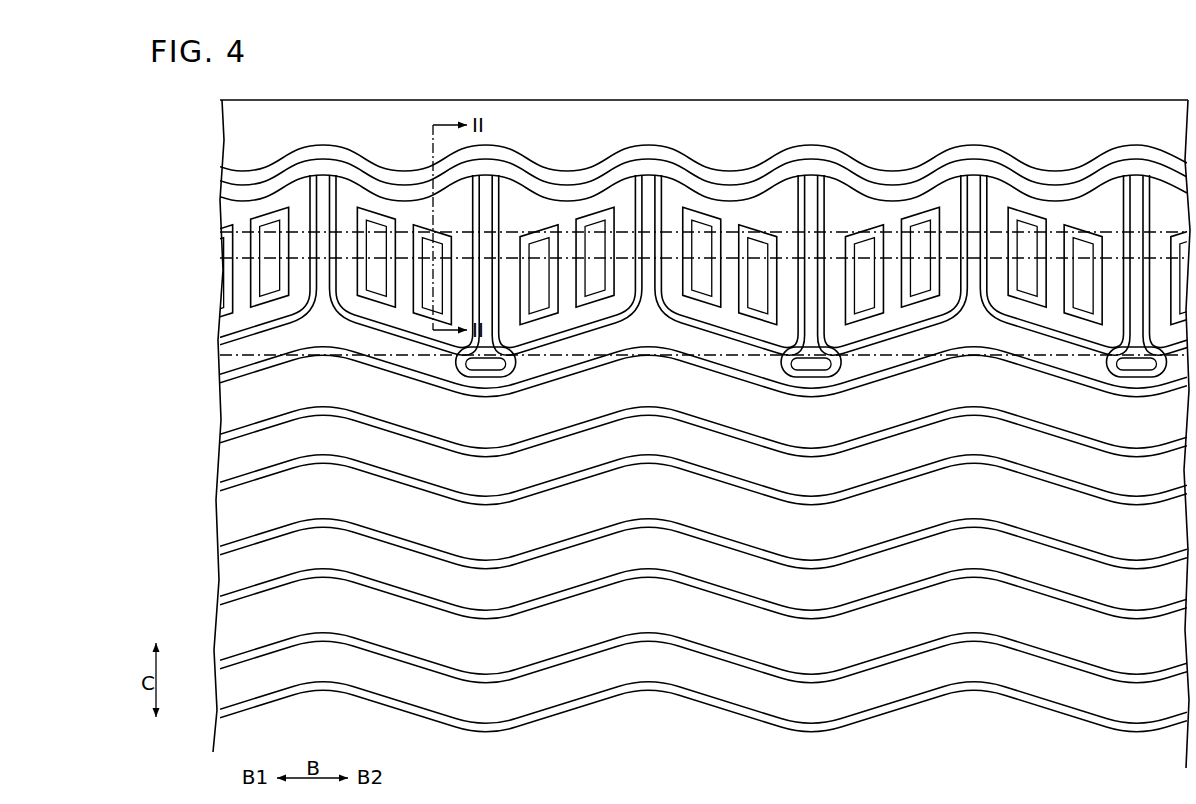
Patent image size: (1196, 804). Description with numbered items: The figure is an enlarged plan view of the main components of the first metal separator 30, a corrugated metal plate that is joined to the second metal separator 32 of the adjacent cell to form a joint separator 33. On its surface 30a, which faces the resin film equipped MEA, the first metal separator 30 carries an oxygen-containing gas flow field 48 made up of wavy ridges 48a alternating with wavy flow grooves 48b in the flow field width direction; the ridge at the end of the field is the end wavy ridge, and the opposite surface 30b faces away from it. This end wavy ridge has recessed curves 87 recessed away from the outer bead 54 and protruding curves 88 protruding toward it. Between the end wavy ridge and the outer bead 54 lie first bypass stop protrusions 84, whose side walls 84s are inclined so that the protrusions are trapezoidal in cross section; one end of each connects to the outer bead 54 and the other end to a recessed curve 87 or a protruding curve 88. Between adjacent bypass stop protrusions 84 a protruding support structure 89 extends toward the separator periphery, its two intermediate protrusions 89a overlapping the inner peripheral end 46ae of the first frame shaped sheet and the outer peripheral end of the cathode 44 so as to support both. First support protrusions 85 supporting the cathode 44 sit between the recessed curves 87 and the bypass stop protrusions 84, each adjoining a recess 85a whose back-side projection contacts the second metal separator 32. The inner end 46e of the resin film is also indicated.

The first metal separator 30 is at (1126, 96).
The surface 30a is at (980, 118).
The housing second surface 30b is at (1020, 120).
The second metal separator 32 is at (1163, 96).
The joint separator 33 is at (369, 55).
The cathode 44 is at (298, 262).
The inner peripheral end of the first frame shaped sheet 46ae is at (623, 230).
The inner end of the resin film 46e is at (310, 362).
The oxygen-containing gas flow field 48 is at (796, 579).
The wavy ridge 48a is at (1100, 373).
The wavy flow groove 48b is at (900, 402).
The outer bead 54 is at (805, 160).
The first bypass stop protrusion 84 is at (487, 192).
The side wall 84s is at (480, 240).
The first support protrusion 85 is at (486, 350).
The recess 85a is at (493, 368).
The recessed curve 87 is at (478, 383).
The protruding curve 88 is at (322, 325).
The protruding support structure 89 is at (366, 203).
The intermediate protrusion 89a is at (428, 243).